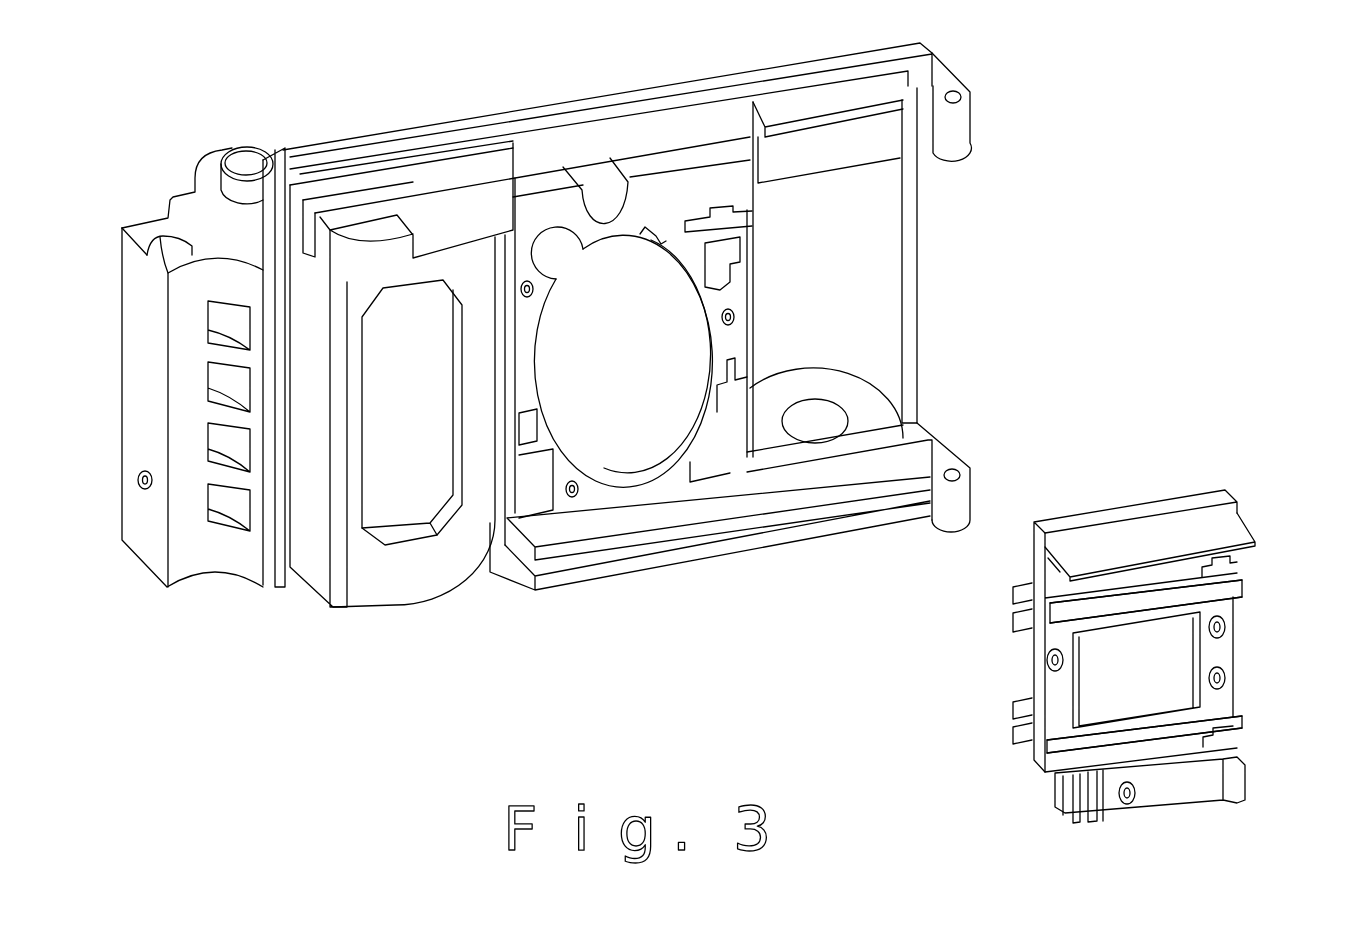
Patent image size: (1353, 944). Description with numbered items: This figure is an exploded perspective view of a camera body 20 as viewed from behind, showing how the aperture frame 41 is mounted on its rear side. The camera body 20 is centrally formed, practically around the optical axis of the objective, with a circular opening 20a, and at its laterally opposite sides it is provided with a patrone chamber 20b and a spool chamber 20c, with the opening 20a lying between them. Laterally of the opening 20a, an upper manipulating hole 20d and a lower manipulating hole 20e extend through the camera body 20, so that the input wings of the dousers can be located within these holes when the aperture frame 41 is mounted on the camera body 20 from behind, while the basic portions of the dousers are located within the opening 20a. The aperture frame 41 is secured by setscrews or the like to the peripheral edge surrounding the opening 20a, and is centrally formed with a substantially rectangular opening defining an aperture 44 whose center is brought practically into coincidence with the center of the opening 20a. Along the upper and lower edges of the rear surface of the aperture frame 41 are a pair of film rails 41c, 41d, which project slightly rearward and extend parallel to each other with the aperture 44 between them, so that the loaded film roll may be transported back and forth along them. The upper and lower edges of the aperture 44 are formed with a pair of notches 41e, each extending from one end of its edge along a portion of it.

The camera body 20 is at (473, 130).
The circular opening 20a is at (620, 453).
The patrone chamber 20b is at (404, 507).
The spool chamber 20c is at (883, 275).
The upper manipulating hole 20d is at (745, 257).
The lower manipulating hole 20e is at (740, 390).
The aperture frame 41 is at (1057, 690).
The film rail 41c is at (1220, 592).
The film rail 41d is at (1073, 757).
The notch 41e is at (1217, 567).
The aperture 44 is at (1170, 662).